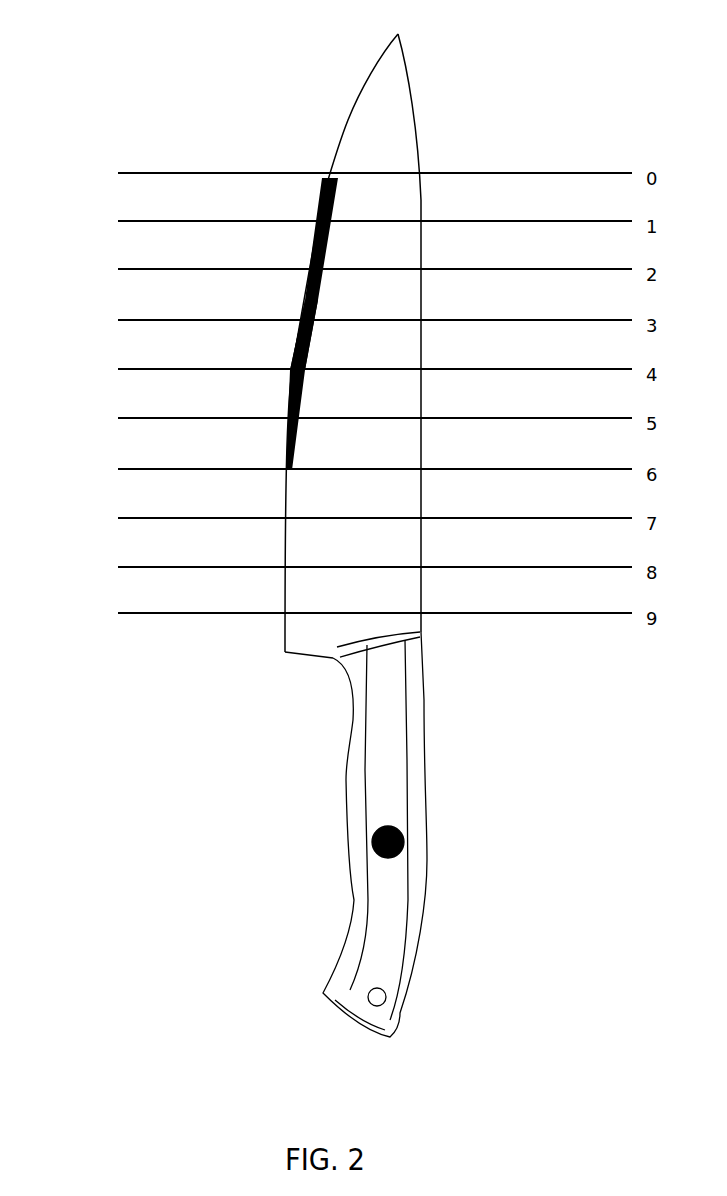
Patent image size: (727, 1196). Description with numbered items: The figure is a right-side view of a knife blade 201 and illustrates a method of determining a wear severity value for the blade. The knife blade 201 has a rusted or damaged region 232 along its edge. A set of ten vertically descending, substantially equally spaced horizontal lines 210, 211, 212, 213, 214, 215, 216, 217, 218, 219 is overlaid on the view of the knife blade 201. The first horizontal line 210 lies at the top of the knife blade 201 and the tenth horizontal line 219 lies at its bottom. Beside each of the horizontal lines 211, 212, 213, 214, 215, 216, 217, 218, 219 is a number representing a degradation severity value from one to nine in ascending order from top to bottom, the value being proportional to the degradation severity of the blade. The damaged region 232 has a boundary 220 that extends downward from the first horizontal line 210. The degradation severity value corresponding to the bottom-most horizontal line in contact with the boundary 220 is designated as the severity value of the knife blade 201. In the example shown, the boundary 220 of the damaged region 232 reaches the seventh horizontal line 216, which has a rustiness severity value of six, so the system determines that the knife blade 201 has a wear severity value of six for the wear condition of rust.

The knife blade 201 is at (370, 135).
The first horizontal line 210 is at (118, 173).
The second horizontal line 211 is at (118, 221).
The third horizontal line 212 is at (118, 269).
The fourth horizontal line 213 is at (118, 320).
The fifth horizontal line 214 is at (118, 369).
The sixth horizontal line 215 is at (118, 418).
The seventh horizontal line 216 is at (118, 469).
The eighth horizontal line 217 is at (118, 518).
The ninth horizontal line 218 is at (118, 567).
The tenth horizontal line 219 is at (118, 613).
The boundary 220 is at (323, 298).
The damaged region 232 is at (325, 247).